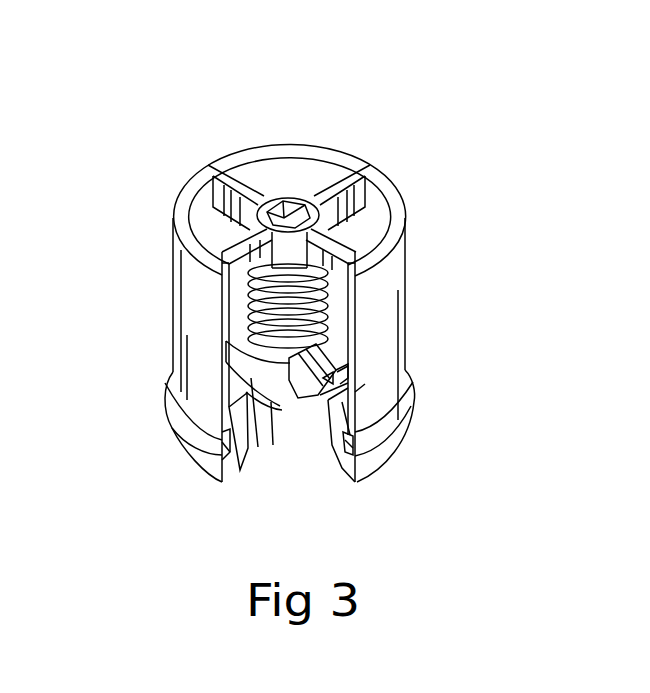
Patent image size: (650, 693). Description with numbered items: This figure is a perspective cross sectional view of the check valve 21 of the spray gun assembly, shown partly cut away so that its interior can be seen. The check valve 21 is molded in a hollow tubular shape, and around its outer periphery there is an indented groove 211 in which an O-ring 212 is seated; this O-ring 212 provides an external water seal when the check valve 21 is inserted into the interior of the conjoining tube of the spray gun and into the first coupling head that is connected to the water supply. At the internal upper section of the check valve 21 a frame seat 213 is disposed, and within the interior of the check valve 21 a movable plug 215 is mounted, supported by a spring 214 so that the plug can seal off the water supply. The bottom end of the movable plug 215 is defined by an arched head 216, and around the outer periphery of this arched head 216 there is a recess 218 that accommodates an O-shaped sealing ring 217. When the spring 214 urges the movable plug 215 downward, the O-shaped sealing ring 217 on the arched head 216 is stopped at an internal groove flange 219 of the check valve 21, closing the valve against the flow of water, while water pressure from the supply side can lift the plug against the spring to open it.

The check valve 21 is at (202, 130).
The indented groove 211 is at (350, 477).
The O-ring 212 is at (380, 438).
The frame seat 213 is at (293, 197).
The spring 214 is at (268, 301).
The movable plug 215 is at (247, 316).
The arched head 216 is at (275, 410).
The O-shaped sealing ring 217 is at (323, 378).
The recess 218 is at (316, 347).
The internal groove flange 219 is at (355, 403).